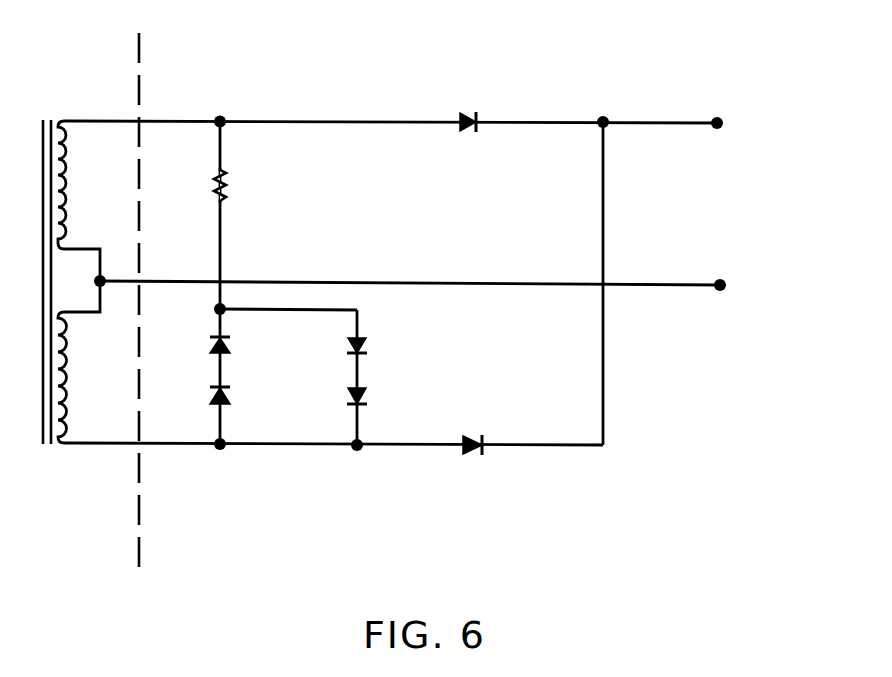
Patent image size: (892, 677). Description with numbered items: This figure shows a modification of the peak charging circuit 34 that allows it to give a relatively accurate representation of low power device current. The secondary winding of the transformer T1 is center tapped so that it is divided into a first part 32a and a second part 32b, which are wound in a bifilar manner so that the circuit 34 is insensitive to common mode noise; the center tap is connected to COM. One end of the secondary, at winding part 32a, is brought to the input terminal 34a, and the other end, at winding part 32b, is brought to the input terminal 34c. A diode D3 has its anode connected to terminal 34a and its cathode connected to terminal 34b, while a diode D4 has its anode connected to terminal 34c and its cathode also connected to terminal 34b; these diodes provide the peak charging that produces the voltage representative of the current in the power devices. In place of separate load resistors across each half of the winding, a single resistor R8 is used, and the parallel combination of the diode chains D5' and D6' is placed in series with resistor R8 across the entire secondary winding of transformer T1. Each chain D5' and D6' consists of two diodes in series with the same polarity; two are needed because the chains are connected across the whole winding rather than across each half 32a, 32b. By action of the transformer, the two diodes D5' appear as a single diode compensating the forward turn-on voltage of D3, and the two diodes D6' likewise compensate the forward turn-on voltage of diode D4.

The circuit 34 is at (341, 68).
The input terminal 34a is at (212, 107).
The terminal 34b is at (750, 124).
The input terminal 34c is at (218, 459).
The first part of secondary winding 32a is at (66, 160).
The second part of secondary winding 32b is at (66, 355).
The transformer T1 is at (43, 261).
The resistor R8 is at (242, 185).
The diode D3 is at (468, 108).
The diode D4 is at (472, 461).
The diode chain D5' is at (383, 371).
The diode chain D6' is at (194, 370).
The common COM is at (751, 286).